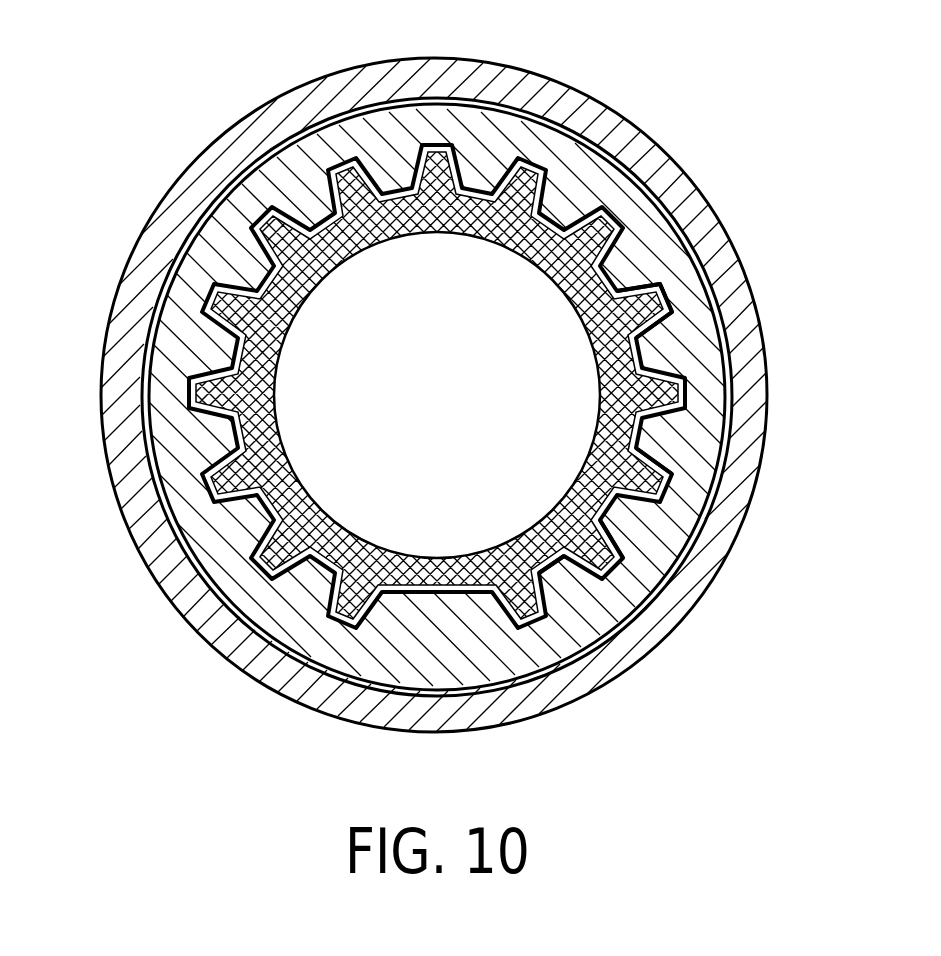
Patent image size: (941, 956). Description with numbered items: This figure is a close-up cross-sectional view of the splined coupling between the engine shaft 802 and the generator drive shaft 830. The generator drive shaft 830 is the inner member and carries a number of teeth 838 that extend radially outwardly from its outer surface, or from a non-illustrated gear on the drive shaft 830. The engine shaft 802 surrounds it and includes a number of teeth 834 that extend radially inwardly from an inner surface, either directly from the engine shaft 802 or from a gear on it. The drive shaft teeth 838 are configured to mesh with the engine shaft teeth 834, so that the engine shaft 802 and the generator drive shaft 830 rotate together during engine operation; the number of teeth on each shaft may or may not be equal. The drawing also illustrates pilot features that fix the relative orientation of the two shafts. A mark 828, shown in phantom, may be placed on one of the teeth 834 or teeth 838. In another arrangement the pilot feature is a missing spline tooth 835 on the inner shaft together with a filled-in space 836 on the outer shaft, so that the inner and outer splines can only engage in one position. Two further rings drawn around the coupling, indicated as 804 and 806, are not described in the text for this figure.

The engine shaft 802 is at (562, 203).
The liner 804 is at (497, 133).
The outer jacket 806 is at (753, 363).
The mark 828 is at (662, 440).
The generator drive shaft 830 is at (518, 402).
The teeth 834 is at (660, 352).
The missing spline tooth 835 is at (437, 600).
The filled-in space 836 is at (443, 633).
The teeth 838 is at (653, 317).